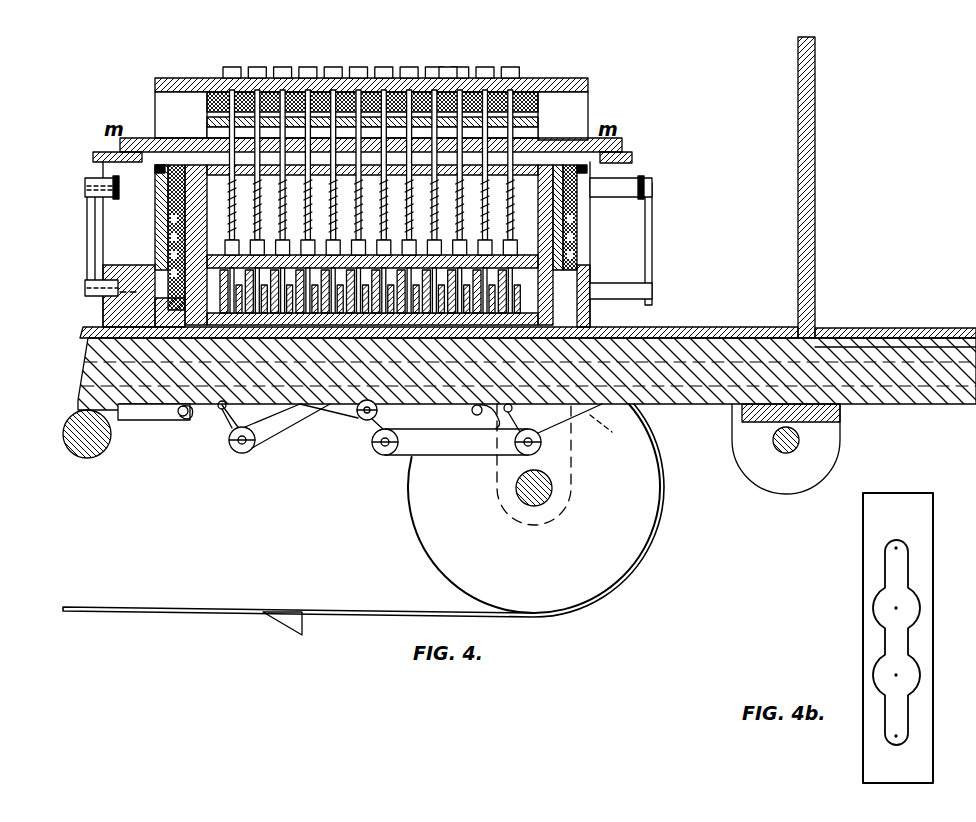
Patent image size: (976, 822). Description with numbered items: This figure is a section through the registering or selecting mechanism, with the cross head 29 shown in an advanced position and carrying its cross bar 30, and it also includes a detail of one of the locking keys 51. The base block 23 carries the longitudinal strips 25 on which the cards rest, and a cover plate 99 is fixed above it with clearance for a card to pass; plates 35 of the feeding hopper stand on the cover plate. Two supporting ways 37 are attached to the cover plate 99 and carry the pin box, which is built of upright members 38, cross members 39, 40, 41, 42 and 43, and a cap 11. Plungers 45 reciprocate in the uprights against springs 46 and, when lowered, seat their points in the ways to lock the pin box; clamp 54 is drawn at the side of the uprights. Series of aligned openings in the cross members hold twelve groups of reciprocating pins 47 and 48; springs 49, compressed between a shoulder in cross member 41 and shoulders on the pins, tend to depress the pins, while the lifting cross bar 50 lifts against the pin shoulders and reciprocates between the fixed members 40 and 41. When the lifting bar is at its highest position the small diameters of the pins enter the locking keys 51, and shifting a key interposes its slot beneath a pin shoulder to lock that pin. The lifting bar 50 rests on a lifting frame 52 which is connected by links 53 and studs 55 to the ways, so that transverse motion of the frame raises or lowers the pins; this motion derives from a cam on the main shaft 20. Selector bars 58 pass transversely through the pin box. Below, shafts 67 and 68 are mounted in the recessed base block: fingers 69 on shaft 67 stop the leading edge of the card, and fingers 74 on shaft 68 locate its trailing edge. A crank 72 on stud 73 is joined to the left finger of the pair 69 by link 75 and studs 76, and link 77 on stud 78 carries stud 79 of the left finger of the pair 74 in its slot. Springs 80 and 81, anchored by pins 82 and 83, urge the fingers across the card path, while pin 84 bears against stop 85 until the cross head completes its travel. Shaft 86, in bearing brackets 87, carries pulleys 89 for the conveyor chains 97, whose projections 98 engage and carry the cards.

In FIG. 4, the cap block 11 is at (158, 169).
In FIG. 4, the main shaft 20 is at (88, 448).
In FIG. 4, the base block 23 is at (80, 405).
In FIG. 4, the longitudinal strips 25 is at (959, 417).
In FIG. 4, the cross head 29 is at (840, 410).
In FIG. 4, the cross bar 30 is at (785, 450).
In FIG. 4, the plates 35 is at (798, 75).
In FIG. 4, the supporting ways 37 is at (145, 266).
In FIG. 4, the upright members 38 is at (160, 95).
In FIG. 4, the cross member 39 is at (560, 86).
In FIG. 4, the cross member 40 is at (538, 122).
In FIG. 4, the cross member 41 is at (483, 190).
In FIG. 4, the cross member 42 is at (374, 267).
In FIG. 4, the cross member 43 is at (374, 309).
In FIG. 4, the plungers 45 is at (160, 190).
In FIG. 4, the springs 46 is at (168, 212).
In FIG. 4, the reciprocating pins 47 is at (283, 67).
In FIG. 4, the reciprocating pins 48 is at (448, 67).
In FIG. 4, the springs 49 is at (230, 222).
In FIG. 4, the lifting cross bar 50 is at (538, 134).
In FIG. 4, the locking keys 51 is at (212, 112).
In FIG. 4b, the locking keys 51 is at (872, 560).
In FIG. 4, the lifting frame 52 is at (95, 156).
In FIG. 4, the links 53 is at (88, 240).
In FIG. 4, the clamp 54 is at (86, 190).
In FIG. 4, the studs 55 is at (86, 292).
In FIG. 4, the selector bars 58 is at (103, 318).
In FIG. 4, the shaft 67 is at (220, 410).
In FIG. 4, the shaft 68 is at (512, 409).
In FIG. 4, the fingers 69 is at (236, 445).
In FIG. 4, the crank 72 is at (370, 428).
In FIG. 4, the stud 73 is at (329, 422).
In FIG. 4, the fingers 74 is at (582, 428).
In FIG. 4, the link 75 is at (295, 425).
In FIG. 4, the studs 76 is at (250, 452).
In FIG. 4, the link 77 is at (456, 452).
In FIG. 4, the stud 78 is at (385, 455).
In FIG. 4, the stud 79 is at (540, 447).
In FIG. 4, the spring 80 is at (183, 418).
In FIG. 4, the spring 81 is at (441, 442).
In FIG. 4, the pin 82 is at (154, 413).
In FIG. 4, the pin 83 is at (493, 428).
In FIG. 4, the pin 84 is at (611, 429).
In FIG. 4, the stop 85 is at (712, 406).
In FIG. 4, the shaft 86 is at (550, 493).
In FIG. 4, the bearing brackets 87 is at (540, 522).
In FIG. 4, the pulleys 89 is at (412, 522).
In FIG. 4, the conveyor chains 97 is at (452, 612).
In FIG. 4, the projections 98 is at (298, 617).
In FIG. 4, the cover plate 99 is at (712, 338).